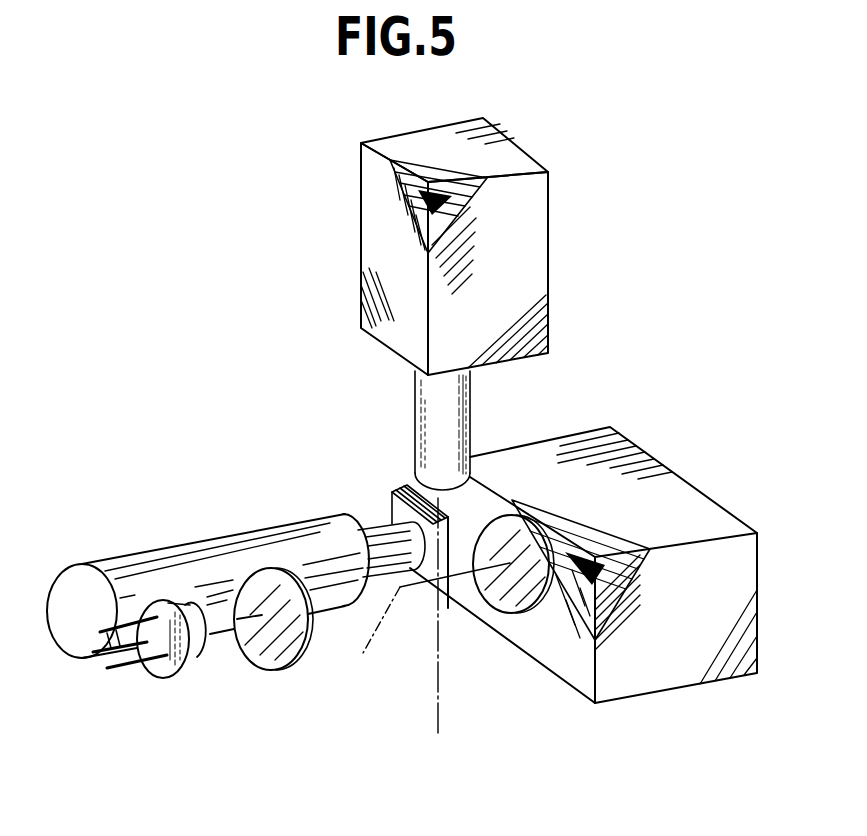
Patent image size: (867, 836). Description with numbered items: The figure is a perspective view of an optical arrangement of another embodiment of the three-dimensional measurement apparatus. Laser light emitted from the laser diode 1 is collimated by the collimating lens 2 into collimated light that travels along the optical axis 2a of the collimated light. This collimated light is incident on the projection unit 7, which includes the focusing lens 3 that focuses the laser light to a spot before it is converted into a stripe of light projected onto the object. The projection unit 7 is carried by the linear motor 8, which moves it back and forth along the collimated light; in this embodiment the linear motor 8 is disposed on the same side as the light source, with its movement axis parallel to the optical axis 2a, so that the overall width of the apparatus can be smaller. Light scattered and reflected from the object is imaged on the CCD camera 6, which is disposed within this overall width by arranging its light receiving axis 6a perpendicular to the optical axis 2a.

The laser diode 1 is at (163, 600).
The collimating lens 2 is at (262, 568).
The optical axis of the collimated light 2a is at (423, 626).
The focusing lens 3 is at (522, 606).
The CCD camera 6 is at (540, 258).
The optical axis of the CCD camera 6a is at (438, 718).
The projection unit 7 is at (670, 467).
The linear motor 8 is at (332, 517).